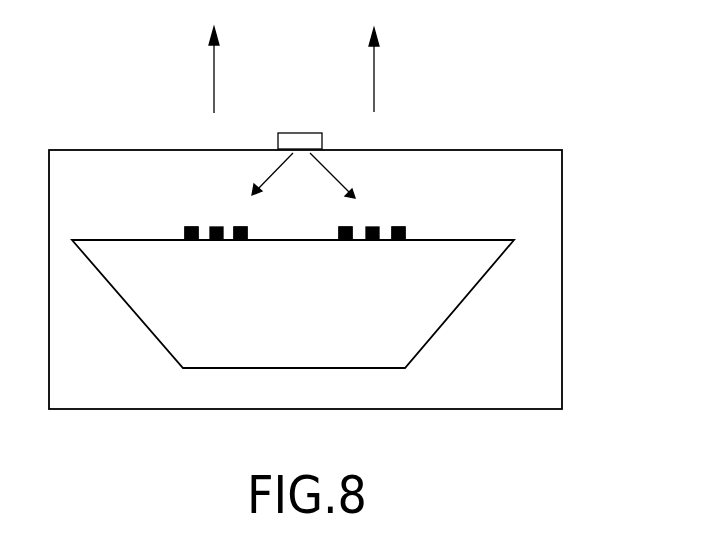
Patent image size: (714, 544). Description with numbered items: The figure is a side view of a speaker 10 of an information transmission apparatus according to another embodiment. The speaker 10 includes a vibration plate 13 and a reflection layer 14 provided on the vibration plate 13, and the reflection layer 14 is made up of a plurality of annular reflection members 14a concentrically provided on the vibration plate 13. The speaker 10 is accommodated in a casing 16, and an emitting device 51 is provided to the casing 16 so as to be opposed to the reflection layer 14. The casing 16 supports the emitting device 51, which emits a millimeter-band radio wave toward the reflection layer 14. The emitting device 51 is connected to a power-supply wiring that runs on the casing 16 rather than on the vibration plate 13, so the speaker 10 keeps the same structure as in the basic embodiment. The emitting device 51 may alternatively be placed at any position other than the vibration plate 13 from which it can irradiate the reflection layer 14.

The speaker 10 is at (112, 260).
The vibration plate 13 is at (458, 240).
The reflection layer 14 is at (200, 211).
The reflection members 14a is at (240, 227).
The casing 16 is at (410, 150).
The emitting device 51 is at (300, 133).